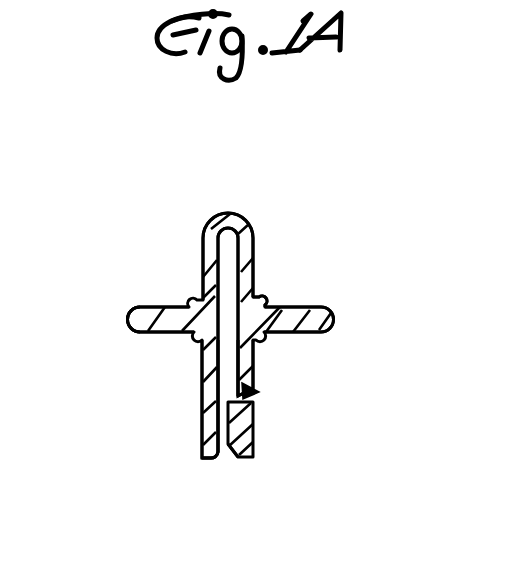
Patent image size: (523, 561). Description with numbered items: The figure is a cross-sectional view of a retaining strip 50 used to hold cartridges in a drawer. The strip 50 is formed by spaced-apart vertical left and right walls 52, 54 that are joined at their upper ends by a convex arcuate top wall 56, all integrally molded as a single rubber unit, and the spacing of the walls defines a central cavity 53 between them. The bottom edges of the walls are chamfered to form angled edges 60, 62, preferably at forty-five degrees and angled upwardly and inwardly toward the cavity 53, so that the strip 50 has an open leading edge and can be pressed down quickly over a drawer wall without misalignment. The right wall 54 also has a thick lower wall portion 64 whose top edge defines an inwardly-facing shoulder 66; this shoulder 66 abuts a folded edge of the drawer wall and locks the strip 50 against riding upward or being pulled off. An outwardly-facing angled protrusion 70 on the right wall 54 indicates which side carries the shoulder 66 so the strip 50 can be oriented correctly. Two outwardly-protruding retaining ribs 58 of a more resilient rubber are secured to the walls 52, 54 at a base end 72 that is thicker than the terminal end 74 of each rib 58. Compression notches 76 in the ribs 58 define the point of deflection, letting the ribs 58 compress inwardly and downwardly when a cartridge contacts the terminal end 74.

The strip 50 is at (190, 231).
The left wall 52 is at (208, 426).
The central cavity 53 is at (224, 362).
The right wall 54 is at (254, 256).
The convex arcuate top wall 56 is at (244, 218).
The retaining rib 58 is at (332, 317).
The angled edge 60 is at (209, 458).
The angled edge 62 is at (232, 459).
The thick lower wall portion 64 is at (253, 435).
The inwardly-facing shoulder 66 is at (258, 391).
The angled protrusion 70 is at (258, 389).
The base end 72 is at (201, 278).
The terminal end 74 is at (116, 317).
The compression notch 76 is at (264, 303).